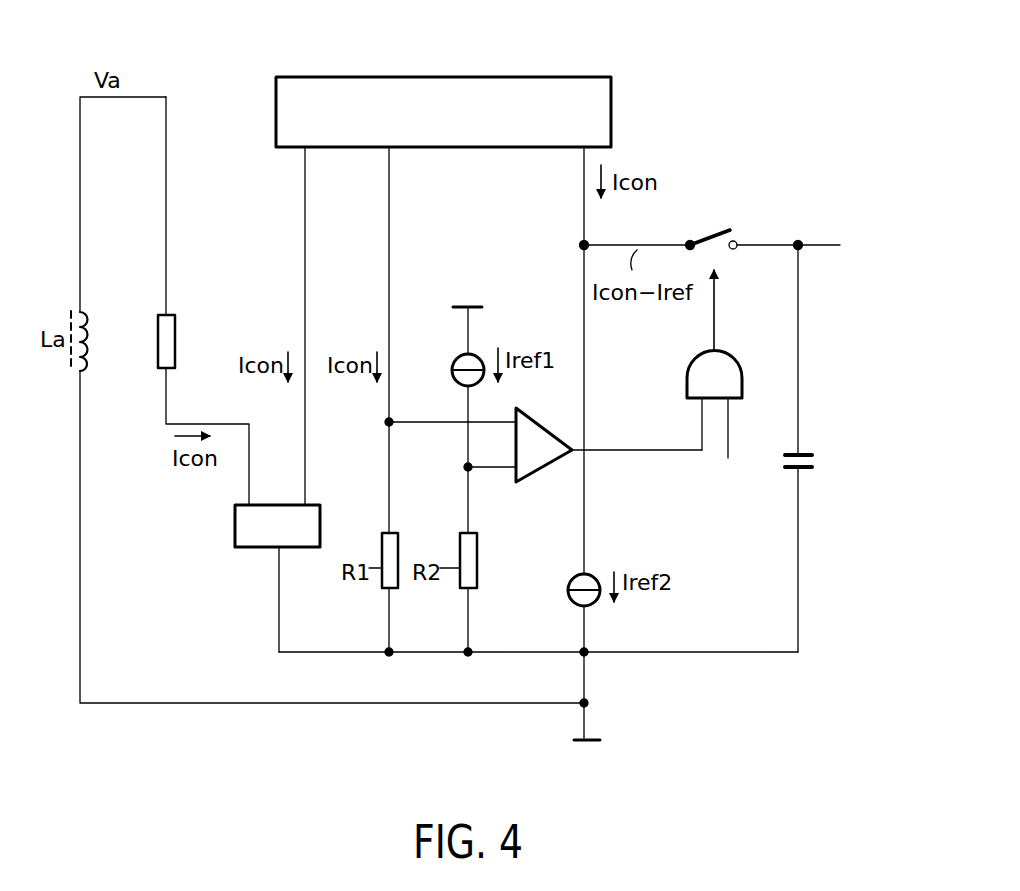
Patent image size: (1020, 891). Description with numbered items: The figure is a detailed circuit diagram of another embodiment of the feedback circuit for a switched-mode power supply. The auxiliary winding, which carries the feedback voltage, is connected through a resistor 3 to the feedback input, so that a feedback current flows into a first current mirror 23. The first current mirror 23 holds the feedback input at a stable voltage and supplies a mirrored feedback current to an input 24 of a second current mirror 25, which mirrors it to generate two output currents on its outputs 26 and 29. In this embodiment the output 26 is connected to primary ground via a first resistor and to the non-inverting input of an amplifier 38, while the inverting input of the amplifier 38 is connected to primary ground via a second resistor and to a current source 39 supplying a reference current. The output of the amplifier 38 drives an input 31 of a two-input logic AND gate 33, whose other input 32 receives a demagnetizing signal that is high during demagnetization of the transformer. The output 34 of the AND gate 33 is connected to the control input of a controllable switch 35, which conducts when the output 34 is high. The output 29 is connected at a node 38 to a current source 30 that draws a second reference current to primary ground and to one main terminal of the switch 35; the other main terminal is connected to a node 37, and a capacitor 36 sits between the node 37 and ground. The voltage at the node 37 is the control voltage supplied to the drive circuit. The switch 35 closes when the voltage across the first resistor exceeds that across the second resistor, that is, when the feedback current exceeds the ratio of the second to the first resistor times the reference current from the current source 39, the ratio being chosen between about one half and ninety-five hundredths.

The resistor 3 is at (158, 333).
The first current mirror 23 is at (248, 549).
The input of the second current mirror 24 is at (300, 150).
The second current mirror 25 is at (537, 75).
The output of the second current mirror 26 is at (392, 150).
The output of the second current mirror 29 is at (580, 152).
The current source 30 is at (568, 584).
The input of the AND gate 31 is at (700, 428).
The other input of the AND gate 32 is at (732, 440).
The logic AND gate 33 is at (687, 382).
The output of the AND gate 34 is at (718, 313).
The controllable switch 35 is at (713, 228).
The capacitor 36 is at (783, 463).
The node 37 is at (815, 242).
The amplifier 38 is at (579, 246).
The current source 39 is at (452, 364).